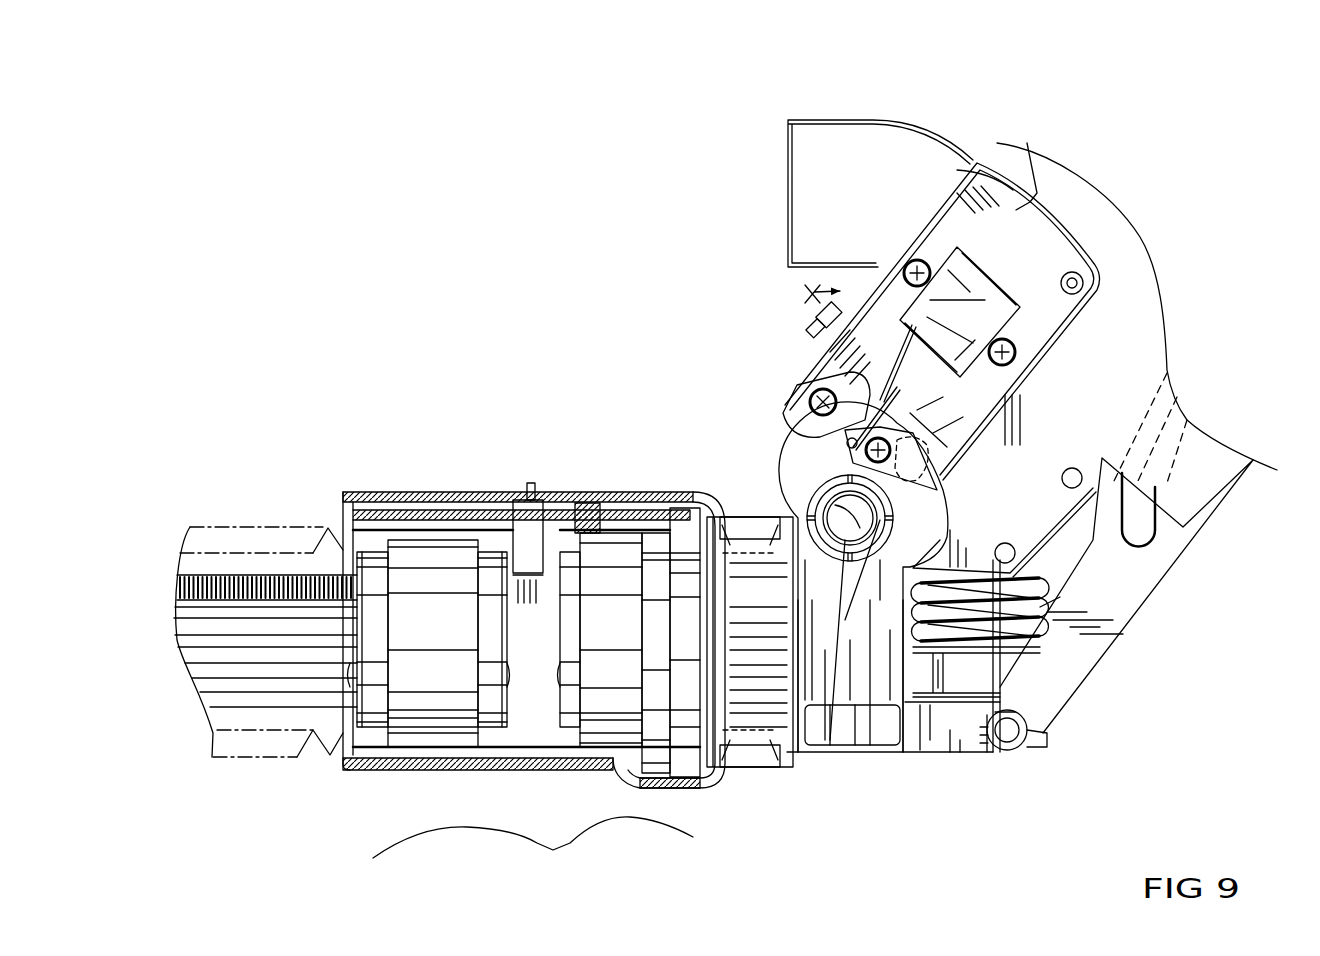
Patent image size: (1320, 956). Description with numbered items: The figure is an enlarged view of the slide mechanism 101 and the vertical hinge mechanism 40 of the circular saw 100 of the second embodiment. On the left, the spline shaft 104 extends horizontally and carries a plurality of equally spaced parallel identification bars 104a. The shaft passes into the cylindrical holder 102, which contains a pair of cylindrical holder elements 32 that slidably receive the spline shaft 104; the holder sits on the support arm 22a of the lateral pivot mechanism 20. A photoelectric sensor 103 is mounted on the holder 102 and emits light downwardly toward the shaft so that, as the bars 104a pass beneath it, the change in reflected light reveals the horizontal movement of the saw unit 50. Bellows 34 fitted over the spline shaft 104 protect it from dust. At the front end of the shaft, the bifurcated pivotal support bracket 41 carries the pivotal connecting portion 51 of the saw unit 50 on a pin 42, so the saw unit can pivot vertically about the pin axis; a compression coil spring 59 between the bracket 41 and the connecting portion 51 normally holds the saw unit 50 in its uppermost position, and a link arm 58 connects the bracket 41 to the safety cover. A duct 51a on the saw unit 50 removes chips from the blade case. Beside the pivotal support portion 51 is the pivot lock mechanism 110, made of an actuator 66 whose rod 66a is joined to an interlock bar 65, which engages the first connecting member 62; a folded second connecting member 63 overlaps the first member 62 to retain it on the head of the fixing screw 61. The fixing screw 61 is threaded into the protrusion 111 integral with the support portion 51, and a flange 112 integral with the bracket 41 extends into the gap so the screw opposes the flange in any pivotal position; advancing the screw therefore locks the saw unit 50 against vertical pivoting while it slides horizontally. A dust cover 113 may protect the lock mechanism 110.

The lateral pivot mechanism 20 is at (400, 798).
The support arm 22a is at (410, 770).
The cylindrical holder elements 32 is at (593, 770).
The bellows 34 is at (755, 767).
The vertical hinge mechanism 40 is at (883, 770).
The pivotal support bracket 41 is at (830, 750).
The pin 42 is at (840, 520).
The saw unit 50 is at (977, 158).
The pivotal connecting portion 51 is at (1040, 493).
The duct 51a is at (853, 170).
The link arm 58 is at (1082, 637).
The compression coil spring 59 is at (1030, 640).
The fixing screw 61 is at (915, 485).
The first connecting member 62 is at (800, 490).
The second connecting member 63 is at (948, 470).
The interlock bar 65 is at (835, 378).
The actuator 66 is at (962, 318).
The rod 66a is at (893, 365).
The circular saw 100 is at (755, 218).
The slide mechanism 101 is at (600, 468).
The cylindrical holder 102 is at (425, 515).
The photoelectric sensor 103 is at (530, 542).
The spline shaft 104 is at (220, 620).
The parallel identification bars 104a is at (283, 580).
The pivot lock mechanism 110 is at (1000, 265).
The protrusion 111 is at (837, 267).
The flange 112 is at (948, 750).
The dust cover 113 is at (1030, 338).